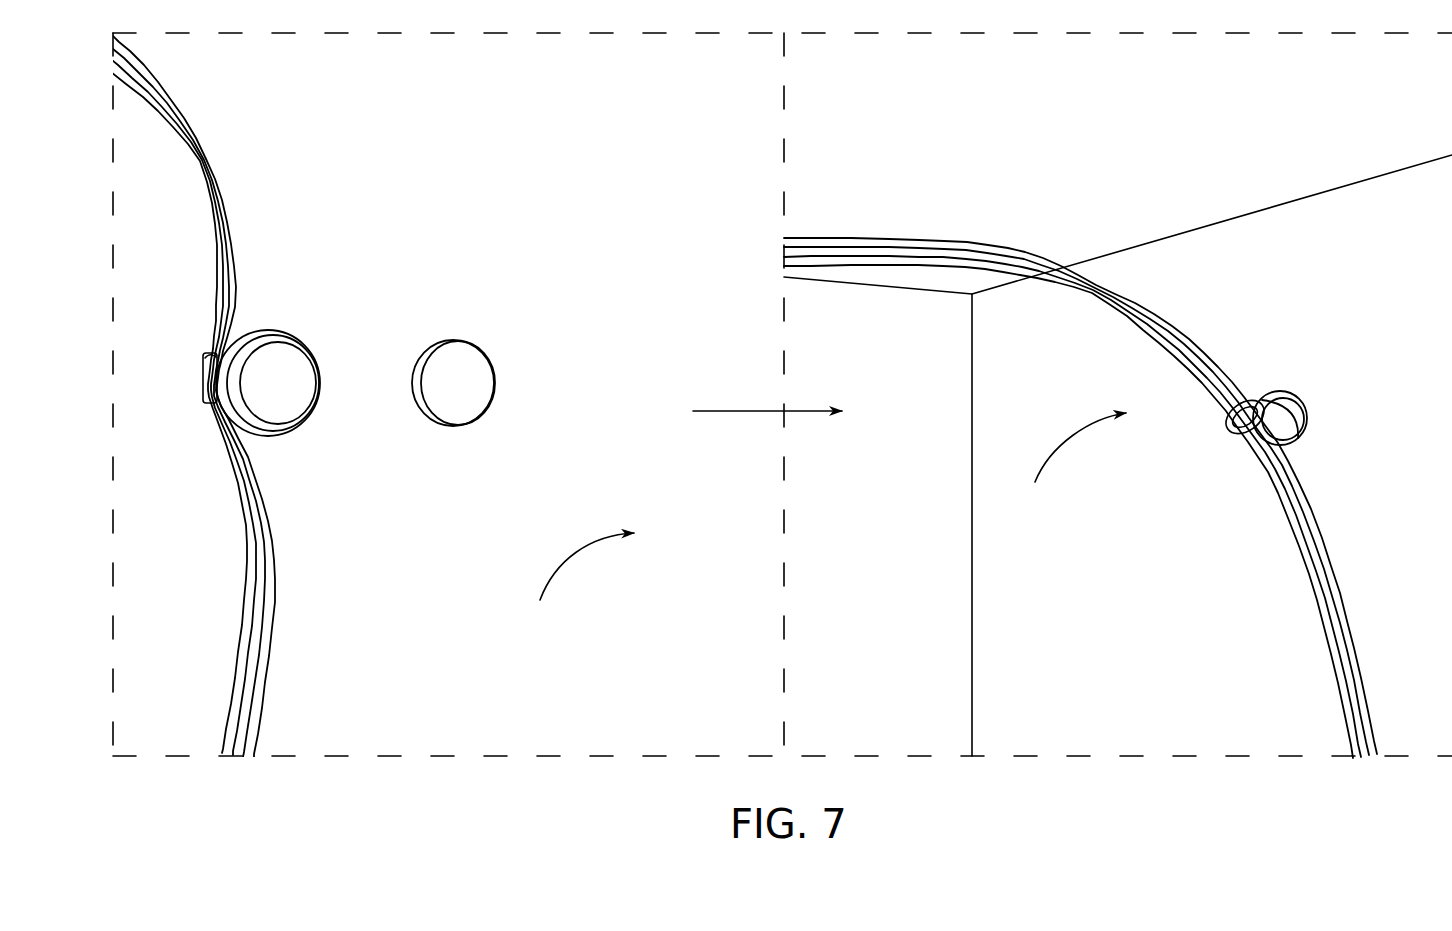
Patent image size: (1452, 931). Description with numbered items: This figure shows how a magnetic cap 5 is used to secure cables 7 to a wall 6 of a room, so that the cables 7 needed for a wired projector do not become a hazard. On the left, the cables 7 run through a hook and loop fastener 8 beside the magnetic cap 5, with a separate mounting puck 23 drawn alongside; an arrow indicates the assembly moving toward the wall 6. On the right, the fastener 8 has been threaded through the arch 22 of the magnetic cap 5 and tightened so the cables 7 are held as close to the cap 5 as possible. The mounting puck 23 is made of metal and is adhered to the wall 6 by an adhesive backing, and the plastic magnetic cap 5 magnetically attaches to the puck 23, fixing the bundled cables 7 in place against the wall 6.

The magnetic cap 5 is at (320, 367).
The wall 6 is at (826, 520).
The cables 7 is at (207, 162).
The hook and loop fastener 8 is at (203, 365).
The arch 22 is at (1297, 425).
The mounting puck 23 is at (482, 408).